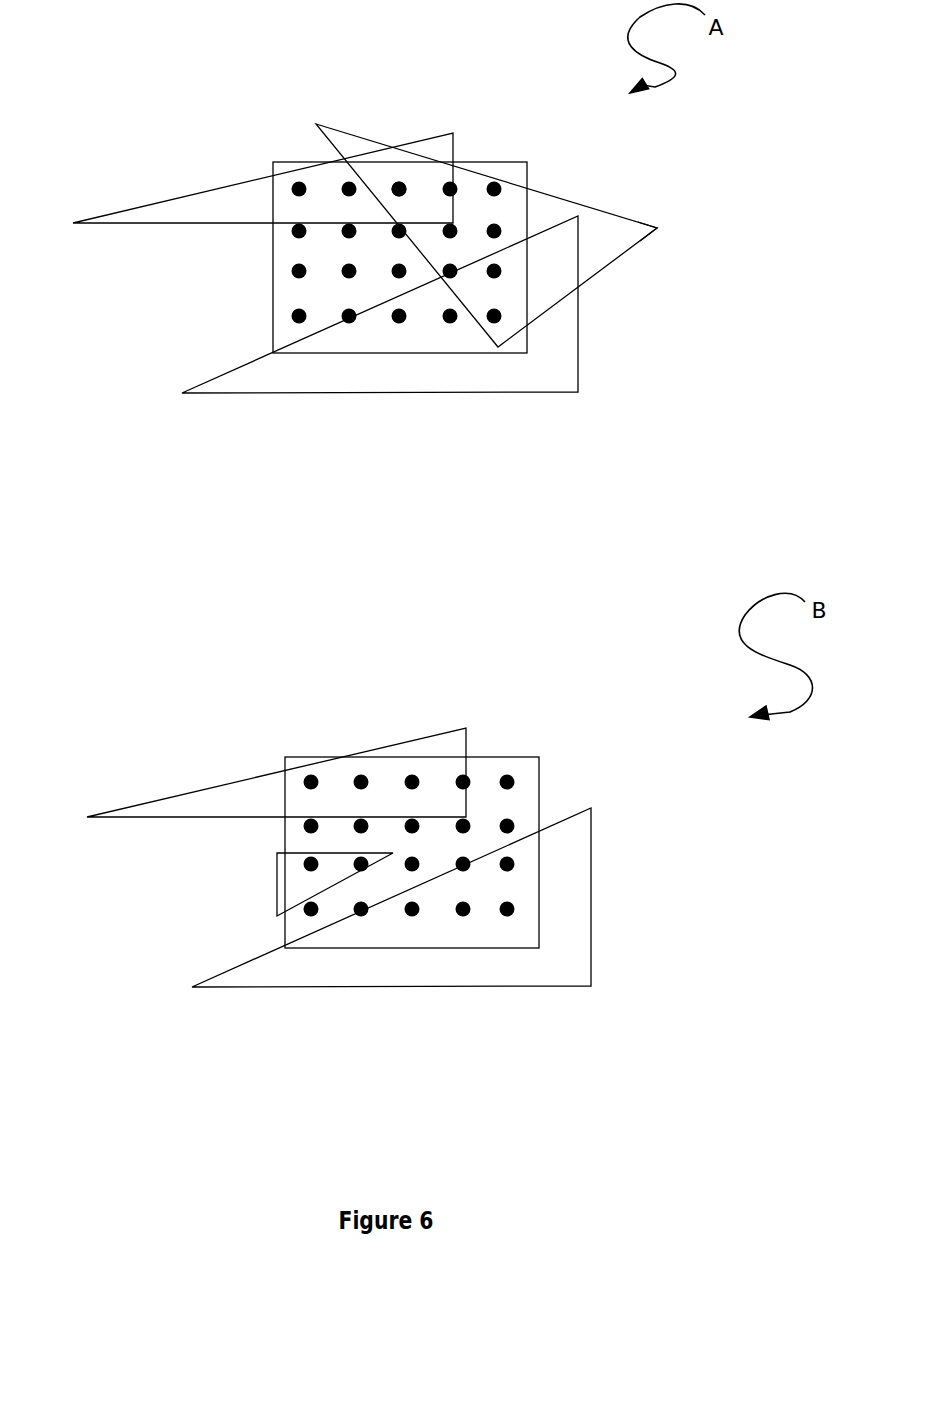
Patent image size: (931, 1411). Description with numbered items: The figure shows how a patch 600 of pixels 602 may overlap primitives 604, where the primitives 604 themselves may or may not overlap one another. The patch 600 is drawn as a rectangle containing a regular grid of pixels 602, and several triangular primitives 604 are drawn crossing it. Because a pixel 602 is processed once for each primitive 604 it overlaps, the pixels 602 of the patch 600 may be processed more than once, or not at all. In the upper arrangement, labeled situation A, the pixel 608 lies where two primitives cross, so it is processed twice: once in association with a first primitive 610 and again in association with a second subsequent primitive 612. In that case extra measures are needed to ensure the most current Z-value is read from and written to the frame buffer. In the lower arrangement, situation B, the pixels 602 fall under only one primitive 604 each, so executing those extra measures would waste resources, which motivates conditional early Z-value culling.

The patch 600 is at (271, 311).
The pixels 602 is at (298, 274).
The primitives 604 is at (343, 133).
The pixel 608 is at (399, 183).
The first primitive 610 is at (115, 212).
The second subsequent primitive 612 is at (630, 228).